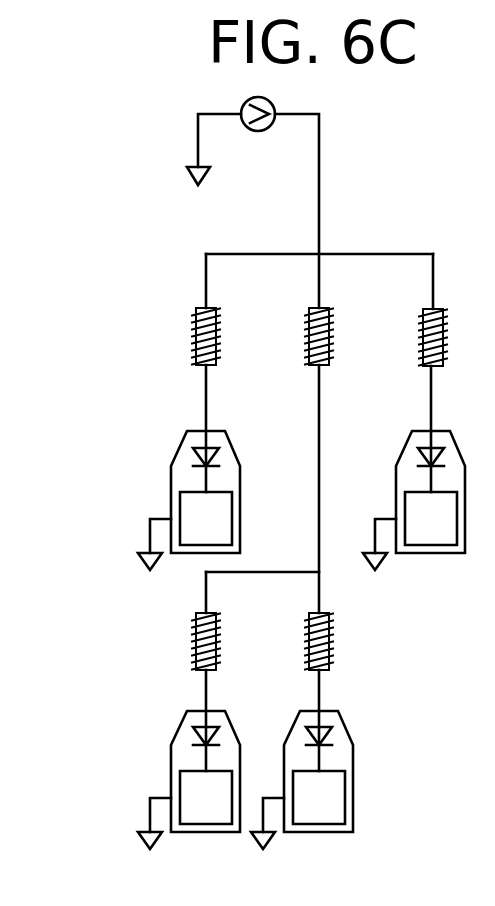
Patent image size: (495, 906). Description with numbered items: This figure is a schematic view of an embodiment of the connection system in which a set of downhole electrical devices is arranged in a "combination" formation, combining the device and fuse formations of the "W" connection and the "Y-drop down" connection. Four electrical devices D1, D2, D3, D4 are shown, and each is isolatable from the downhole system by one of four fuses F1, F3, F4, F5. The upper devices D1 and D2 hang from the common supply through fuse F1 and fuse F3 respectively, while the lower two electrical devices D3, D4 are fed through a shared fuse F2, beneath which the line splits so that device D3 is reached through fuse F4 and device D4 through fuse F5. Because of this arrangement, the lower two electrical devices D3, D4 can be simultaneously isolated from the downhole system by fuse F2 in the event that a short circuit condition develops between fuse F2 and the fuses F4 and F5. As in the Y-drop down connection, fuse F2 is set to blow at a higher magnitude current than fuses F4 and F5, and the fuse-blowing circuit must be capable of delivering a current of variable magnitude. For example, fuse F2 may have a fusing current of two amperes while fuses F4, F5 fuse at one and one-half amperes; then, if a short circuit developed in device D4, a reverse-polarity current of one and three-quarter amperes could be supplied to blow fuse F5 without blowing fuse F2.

The fuse F1 is at (190, 336).
The fuse F2 is at (303, 336).
The fuse F3 is at (416, 337).
The fuse F4 is at (190, 641).
The fuse F5 is at (303, 641).
The electrical device D1 is at (189, 467).
The electrical device D2 is at (414, 468).
The electrical device D3 is at (189, 759).
The electrical device D4 is at (302, 759).